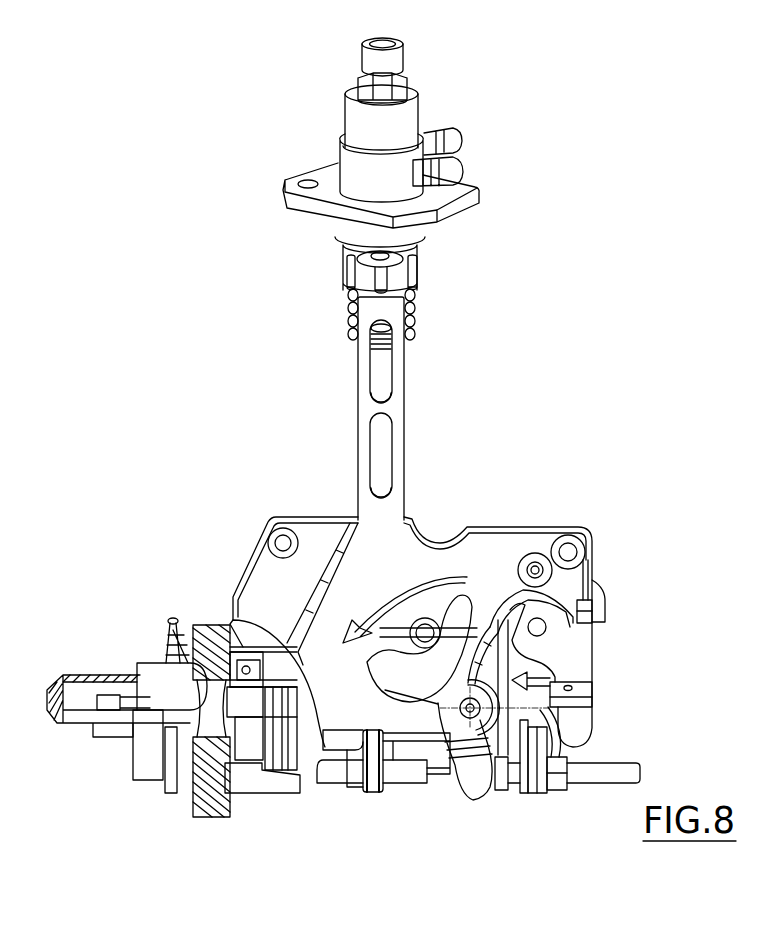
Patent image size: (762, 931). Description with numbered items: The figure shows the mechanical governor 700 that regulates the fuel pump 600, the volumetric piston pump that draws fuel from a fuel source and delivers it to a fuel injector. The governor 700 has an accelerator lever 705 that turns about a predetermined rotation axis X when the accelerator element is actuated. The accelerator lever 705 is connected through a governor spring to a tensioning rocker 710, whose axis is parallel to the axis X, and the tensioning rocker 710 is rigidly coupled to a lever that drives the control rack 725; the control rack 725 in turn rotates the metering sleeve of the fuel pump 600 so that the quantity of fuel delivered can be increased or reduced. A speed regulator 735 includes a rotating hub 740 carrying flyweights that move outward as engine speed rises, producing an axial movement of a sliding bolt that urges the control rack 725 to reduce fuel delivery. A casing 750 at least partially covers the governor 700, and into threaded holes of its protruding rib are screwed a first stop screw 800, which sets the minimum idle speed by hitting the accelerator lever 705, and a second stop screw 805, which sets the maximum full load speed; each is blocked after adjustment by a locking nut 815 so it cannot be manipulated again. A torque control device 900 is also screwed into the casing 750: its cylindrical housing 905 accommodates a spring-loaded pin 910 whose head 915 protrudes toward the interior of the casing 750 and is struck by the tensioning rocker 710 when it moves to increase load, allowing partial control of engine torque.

The fuel pump 600 is at (300, 126).
The governor 700 is at (540, 475).
The accelerator lever 705 is at (468, 772).
The tensioning rocker 710 is at (298, 695).
The control rack 725 is at (380, 410).
The speed regulator 735 is at (178, 597).
The rotating hub 740 is at (218, 812).
The casing 750 is at (543, 537).
The first stop screw 800 is at (410, 776).
The second stop screw 805 is at (632, 772).
The locking nut 815 is at (360, 787).
The torque control device 900 is at (55, 640).
The cylindrical housing 905 is at (130, 682).
The pin 910 is at (165, 700).
The head 915 is at (273, 680).
The rotation axis X is at (476, 706).